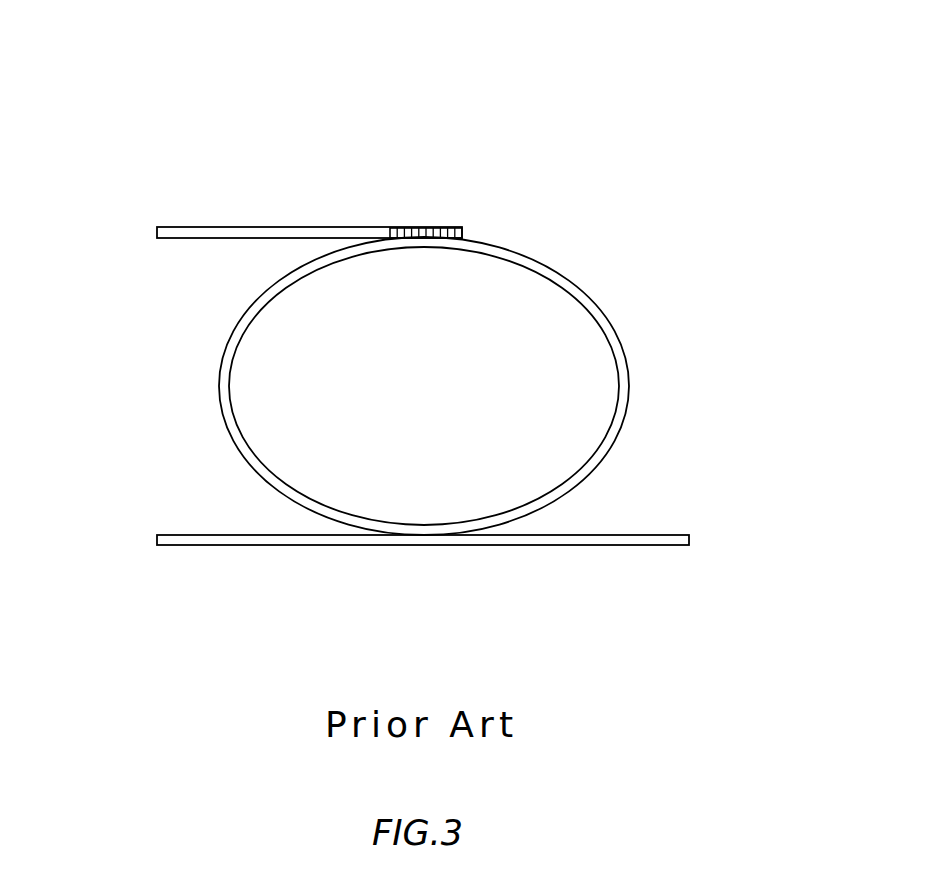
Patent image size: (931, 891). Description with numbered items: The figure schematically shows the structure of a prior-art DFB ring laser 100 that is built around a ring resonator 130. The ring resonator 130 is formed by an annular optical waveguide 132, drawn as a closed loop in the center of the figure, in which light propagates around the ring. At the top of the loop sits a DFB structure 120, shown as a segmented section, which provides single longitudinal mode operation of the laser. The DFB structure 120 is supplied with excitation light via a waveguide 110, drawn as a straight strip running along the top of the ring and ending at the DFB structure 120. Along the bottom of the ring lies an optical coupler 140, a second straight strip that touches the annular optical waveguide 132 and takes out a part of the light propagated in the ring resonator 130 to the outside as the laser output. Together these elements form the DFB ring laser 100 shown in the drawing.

The DFB ring laser 100 is at (88, 52).
The waveguide 110 is at (243, 226).
The DFB structure 120 is at (429, 220).
The ring resonator 130 is at (478, 348).
The annular optical waveguide 132 is at (630, 387).
The optical coupler 140 is at (405, 552).